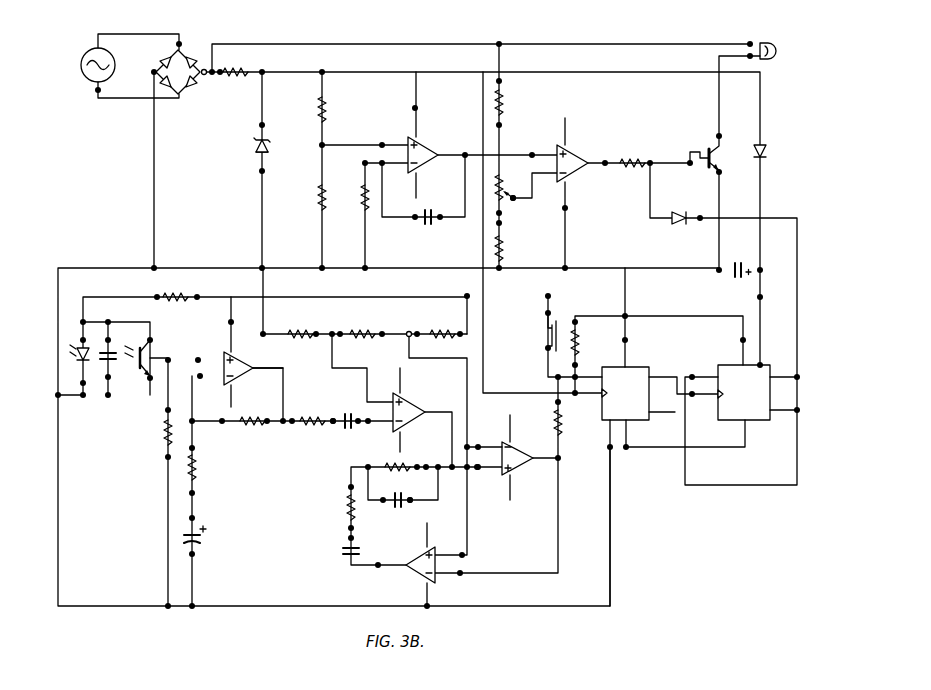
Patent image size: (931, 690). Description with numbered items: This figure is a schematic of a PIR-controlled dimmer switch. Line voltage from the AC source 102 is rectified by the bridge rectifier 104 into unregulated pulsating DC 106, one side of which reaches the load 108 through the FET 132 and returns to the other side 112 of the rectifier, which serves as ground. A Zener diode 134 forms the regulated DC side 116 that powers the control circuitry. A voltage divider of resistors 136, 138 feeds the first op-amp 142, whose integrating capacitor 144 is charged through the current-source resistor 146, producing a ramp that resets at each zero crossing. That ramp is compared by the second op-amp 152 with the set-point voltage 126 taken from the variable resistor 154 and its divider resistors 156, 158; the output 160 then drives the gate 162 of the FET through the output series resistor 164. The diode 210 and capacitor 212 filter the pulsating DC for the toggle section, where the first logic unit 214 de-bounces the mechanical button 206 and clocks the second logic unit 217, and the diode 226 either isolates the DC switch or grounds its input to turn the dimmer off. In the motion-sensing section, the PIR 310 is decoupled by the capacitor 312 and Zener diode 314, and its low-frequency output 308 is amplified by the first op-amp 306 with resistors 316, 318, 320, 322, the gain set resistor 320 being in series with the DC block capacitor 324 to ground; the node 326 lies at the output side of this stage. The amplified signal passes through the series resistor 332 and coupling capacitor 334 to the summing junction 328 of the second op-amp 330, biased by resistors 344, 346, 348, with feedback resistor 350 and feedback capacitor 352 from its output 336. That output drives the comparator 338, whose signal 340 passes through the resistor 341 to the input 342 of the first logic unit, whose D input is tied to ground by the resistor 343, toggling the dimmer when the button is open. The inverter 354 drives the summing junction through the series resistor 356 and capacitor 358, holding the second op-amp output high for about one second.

The AC source 102 is at (114, 62).
The bridge rectifier 104 is at (192, 46).
The unregulated pulsating DC 106 is at (501, 43).
The load 108 is at (767, 43).
The other side of the bridge rectifier 112 is at (158, 266).
The regulated DC side 116 is at (323, 70).
The set-point voltage 126 is at (512, 190).
The FET 132 is at (719, 146).
The Zener diode 134 is at (254, 151).
The resistor 136 is at (322, 118).
The resistor 138 is at (315, 210).
The first op-amp 142 is at (436, 142).
The integrating capacitor 144 is at (436, 224).
The current-source resistor 146 is at (361, 204).
The second op-amp 152 is at (564, 145).
The variable resistor 154 is at (506, 200).
The first resistor 156 is at (501, 108).
The second resistor 158 is at (504, 250).
The output of the second op-amp 160 is at (606, 171).
The gate of the FET 162 is at (689, 158).
The output series resistor 164 is at (634, 166).
The mechanical button 206 is at (542, 332).
The diode 210 is at (768, 152).
The capacitor 212 is at (732, 275).
The first logic unit 214 is at (629, 365).
The second logic unit 217 is at (744, 362).
The diode 226 is at (686, 226).
The first op-amp 306 is at (247, 362).
The low-frequency output 308 is at (201, 358).
The PIR 310 is at (154, 356).
The capacitor 312 is at (114, 330).
The Zener diode 314 is at (88, 386).
The resistor 316 is at (170, 295).
The resistor 318 is at (160, 444).
The gain set resistor 320 is at (198, 476).
The resistor 322 is at (238, 417).
The DC block capacitor 324 is at (201, 546).
The feedback node 326 is at (296, 340).
The summing junction 328 is at (380, 412).
The second op-amp 330 is at (430, 403).
The series resistor 332 is at (323, 416).
The coupling capacitor 334 is at (336, 430).
The output of the second op-amp 336 is at (439, 482).
The comparator 338 is at (514, 445).
The signal 340 is at (561, 458).
The resistor 341 is at (562, 428).
The input of the first logic unit 342 is at (551, 378).
The resistor 343 is at (580, 344).
The bias resistor 344 is at (296, 332).
The bias resistor 346 is at (362, 332).
The bias resistor 348 is at (431, 332).
The feedback resistor 350 is at (401, 463).
The feedback capacitor 352 is at (406, 504).
The inverter 354 is at (410, 579).
The series resistor 356 is at (344, 514).
The capacitor 358 is at (343, 552).